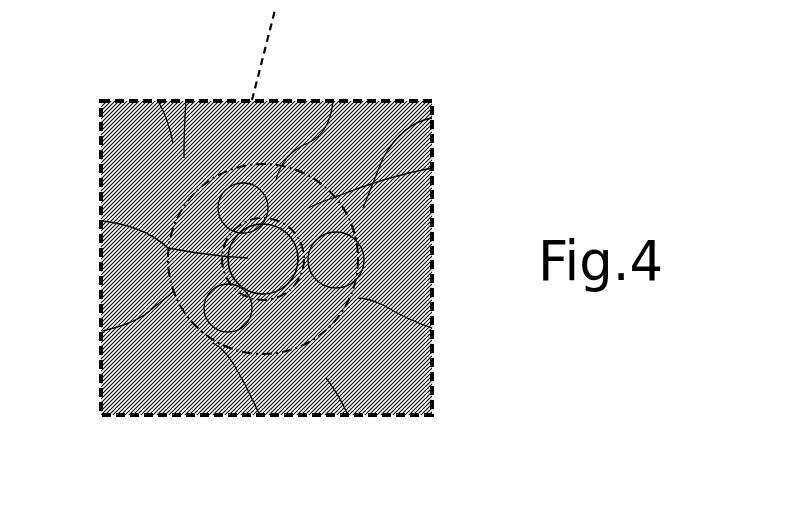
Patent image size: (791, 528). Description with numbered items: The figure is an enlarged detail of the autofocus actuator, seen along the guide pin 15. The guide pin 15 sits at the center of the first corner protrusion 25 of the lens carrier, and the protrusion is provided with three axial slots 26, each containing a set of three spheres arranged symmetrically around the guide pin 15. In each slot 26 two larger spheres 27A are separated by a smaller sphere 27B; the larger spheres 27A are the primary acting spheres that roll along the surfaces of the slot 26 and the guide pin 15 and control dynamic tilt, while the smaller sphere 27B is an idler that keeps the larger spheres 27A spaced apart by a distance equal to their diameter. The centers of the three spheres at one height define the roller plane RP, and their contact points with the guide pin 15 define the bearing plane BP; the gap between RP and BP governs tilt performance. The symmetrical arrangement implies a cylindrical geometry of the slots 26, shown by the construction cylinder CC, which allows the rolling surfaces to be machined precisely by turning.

The first corner protrusion 25 is at (148, 93).
The larger spheres 27A is at (178, 93).
The smaller sphere 27B is at (325, 93).
The roller plane RP is at (424, 110).
The bearing plane BP is at (424, 160).
The guide pin 15 is at (93, 213).
The axial slots 26 is at (424, 320).
The construction cylinder CC is at (340, 407).